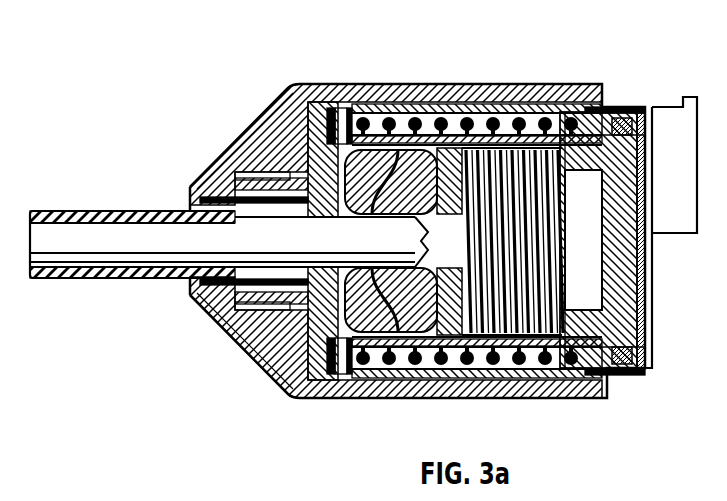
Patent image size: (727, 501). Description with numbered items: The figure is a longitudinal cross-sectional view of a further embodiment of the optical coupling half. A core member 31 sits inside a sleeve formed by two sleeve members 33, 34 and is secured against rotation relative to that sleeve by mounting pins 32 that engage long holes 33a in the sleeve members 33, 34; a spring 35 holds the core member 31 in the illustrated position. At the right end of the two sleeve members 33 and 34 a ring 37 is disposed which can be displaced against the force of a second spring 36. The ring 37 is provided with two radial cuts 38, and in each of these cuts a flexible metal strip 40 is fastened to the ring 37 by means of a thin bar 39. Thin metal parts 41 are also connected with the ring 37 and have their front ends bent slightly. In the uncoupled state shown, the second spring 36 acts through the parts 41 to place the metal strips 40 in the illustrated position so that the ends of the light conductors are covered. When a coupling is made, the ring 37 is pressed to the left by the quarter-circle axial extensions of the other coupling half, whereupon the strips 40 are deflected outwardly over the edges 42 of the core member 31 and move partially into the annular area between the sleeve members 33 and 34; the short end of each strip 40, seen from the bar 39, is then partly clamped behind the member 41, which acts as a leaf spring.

The core member 31 is at (625, 297).
The mounting pins 32 is at (587, 390).
The sleeve member 33 is at (517, 383).
The long holes 33a is at (560, 387).
The sleeve member 34 is at (417, 385).
The spring 35 is at (475, 383).
The second spring 36 is at (437, 100).
The ring 37 is at (642, 42).
The radial cuts 38 is at (617, 112).
The thin bar 39 is at (648, 110).
The flexible metal strip 40 is at (645, 256).
The thin metal parts 41 is at (613, 368).
The edges 42 is at (649, 162).